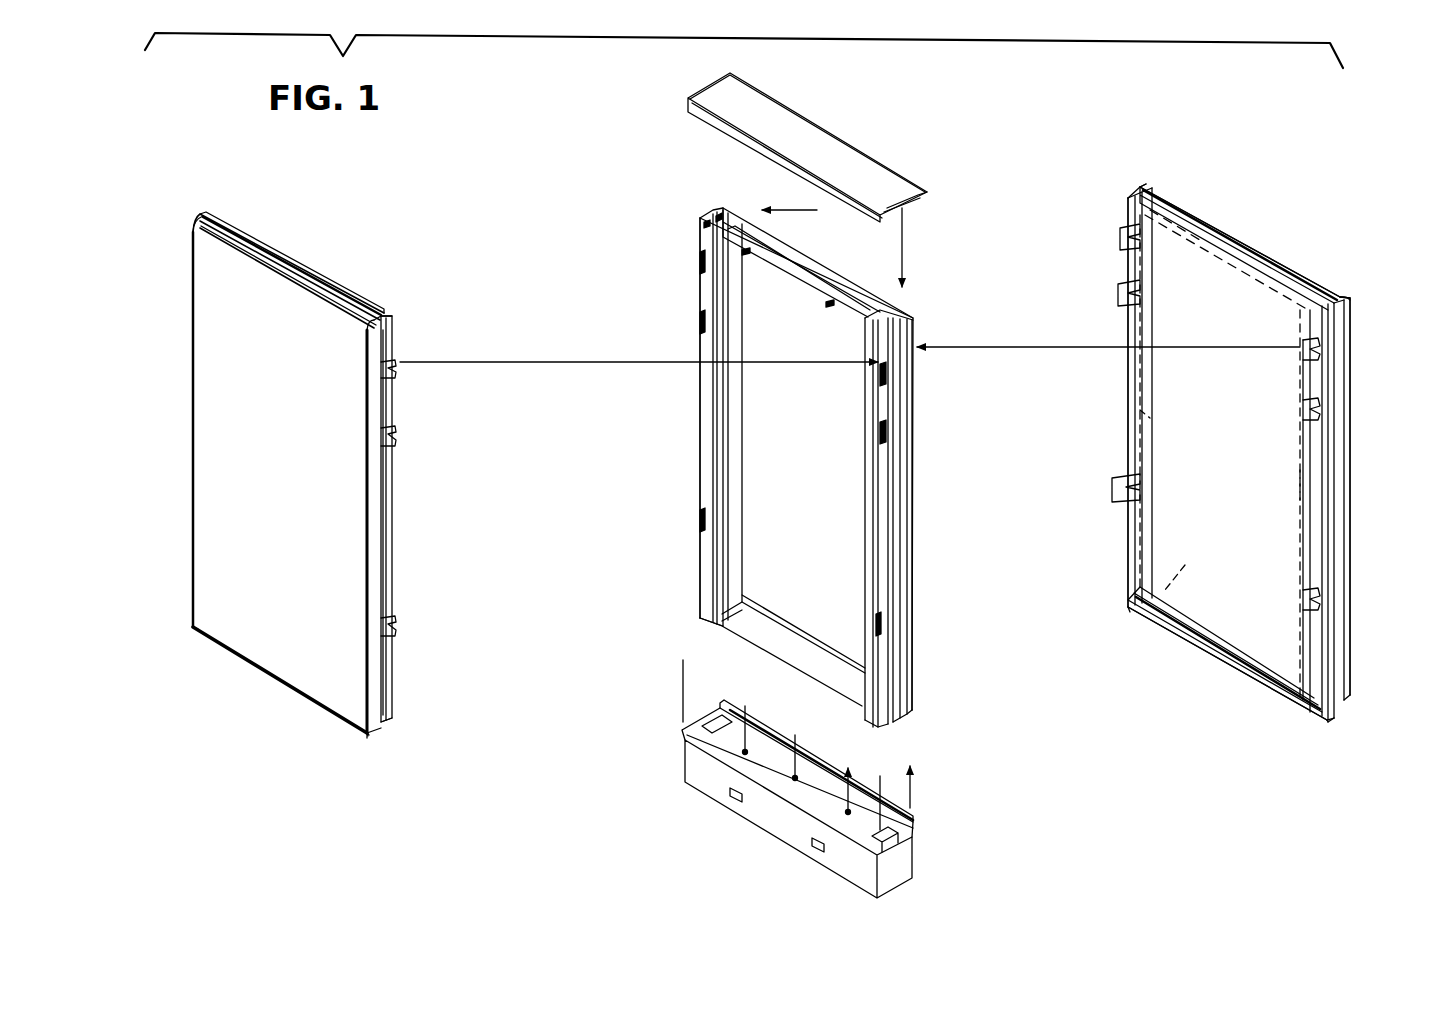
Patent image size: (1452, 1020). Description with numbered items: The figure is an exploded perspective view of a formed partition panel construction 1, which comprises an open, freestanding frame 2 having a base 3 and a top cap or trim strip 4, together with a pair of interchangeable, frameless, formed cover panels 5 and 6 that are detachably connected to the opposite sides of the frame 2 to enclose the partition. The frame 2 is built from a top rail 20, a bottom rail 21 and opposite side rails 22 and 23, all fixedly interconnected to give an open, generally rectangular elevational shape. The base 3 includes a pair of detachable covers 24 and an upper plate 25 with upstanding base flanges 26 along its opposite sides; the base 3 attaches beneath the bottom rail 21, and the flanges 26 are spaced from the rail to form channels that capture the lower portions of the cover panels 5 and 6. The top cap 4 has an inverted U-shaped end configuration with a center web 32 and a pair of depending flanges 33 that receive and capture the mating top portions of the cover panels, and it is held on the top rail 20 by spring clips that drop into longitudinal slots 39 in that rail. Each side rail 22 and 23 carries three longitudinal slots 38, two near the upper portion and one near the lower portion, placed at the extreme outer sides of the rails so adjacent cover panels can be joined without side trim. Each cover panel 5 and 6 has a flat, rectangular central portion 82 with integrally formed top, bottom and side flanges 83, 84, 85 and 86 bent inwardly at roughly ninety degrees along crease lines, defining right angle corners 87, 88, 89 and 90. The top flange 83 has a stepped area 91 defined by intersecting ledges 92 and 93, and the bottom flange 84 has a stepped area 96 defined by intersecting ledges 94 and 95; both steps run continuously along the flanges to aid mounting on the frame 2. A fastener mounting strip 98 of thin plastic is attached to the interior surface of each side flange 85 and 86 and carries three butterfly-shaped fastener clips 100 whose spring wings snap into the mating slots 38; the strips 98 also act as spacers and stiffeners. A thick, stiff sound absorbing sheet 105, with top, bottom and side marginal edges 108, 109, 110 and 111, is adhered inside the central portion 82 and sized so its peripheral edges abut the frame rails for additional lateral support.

The partition panel construction 1 is at (1222, 196).
The frame 2 is at (918, 318).
The base 3 is at (917, 852).
The top cap 4 is at (825, 126).
The cover panel 5 is at (222, 660).
The cover panel 6 is at (1352, 300).
The top rail 20 is at (820, 274).
The bottom rail 21 is at (766, 628).
The side rail 22 is at (740, 402).
The side rail 23 is at (866, 470).
The detachable covers 24 is at (768, 812).
The upper plate 25 is at (716, 770).
The base flanges 26 is at (905, 826).
The center web 32 is at (750, 96).
The depending flanges 33 is at (723, 130).
The slots 38 is at (700, 262).
The slots 39 is at (748, 262).
The central portion 82 is at (746, 470).
The top flange 83 is at (265, 242).
The bottom flange 84 is at (372, 740).
The side flange 85 is at (1130, 200).
The side flange 86 is at (372, 520).
The right angle corner 87 is at (205, 218).
The right angle corner 88 is at (380, 318).
The right angle corner 89 is at (190, 628).
The right angle corner 90 is at (375, 734).
The stepped area 91 is at (385, 335).
The ledge 92 is at (220, 216).
The ledge 93 is at (258, 250).
The ledge 94 is at (368, 742).
The ledge 95 is at (362, 736).
The stepped area 96 is at (362, 740).
The fastener mounting strip 98 is at (392, 480).
The fastener clips 100 is at (394, 372).
The sound absorbing sheet 105 is at (1260, 296).
The top marginal edge 108 is at (1248, 275).
The bottom marginal edge 109 is at (1182, 572).
The side marginal edge 110 is at (1150, 412).
The side marginal edge 111 is at (1300, 482).